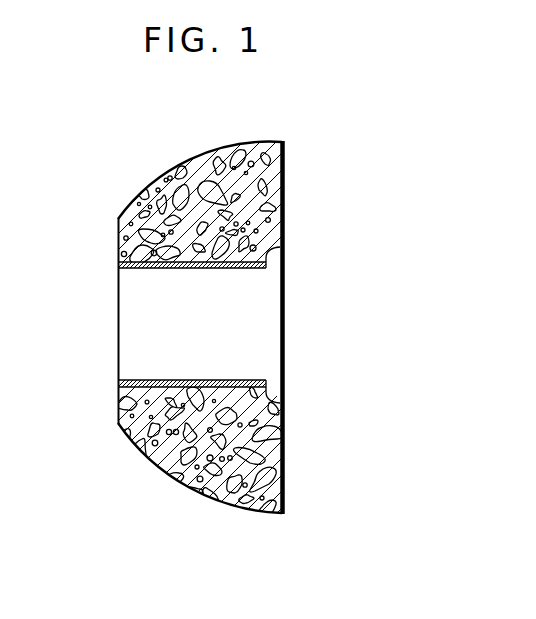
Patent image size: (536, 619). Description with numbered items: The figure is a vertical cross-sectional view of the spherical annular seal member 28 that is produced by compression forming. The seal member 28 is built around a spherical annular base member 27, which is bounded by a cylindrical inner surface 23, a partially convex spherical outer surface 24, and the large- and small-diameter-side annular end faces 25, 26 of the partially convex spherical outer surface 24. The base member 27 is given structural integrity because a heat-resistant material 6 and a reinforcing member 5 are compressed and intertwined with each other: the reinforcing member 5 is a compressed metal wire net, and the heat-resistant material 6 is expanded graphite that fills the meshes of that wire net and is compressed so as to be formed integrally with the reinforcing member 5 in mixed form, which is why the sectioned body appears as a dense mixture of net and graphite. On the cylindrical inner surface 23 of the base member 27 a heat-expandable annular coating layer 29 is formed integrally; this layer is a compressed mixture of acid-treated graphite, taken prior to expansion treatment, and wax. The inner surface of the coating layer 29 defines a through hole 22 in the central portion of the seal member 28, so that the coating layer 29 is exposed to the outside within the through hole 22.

The reinforcing member 5 is at (160, 467).
The heat-resistant material 6 is at (275, 461).
The through hole 22 is at (138, 345).
The cylindrical inner surface 23 is at (141, 268).
The partially convex spherical outer surface 24 is at (219, 155).
The large-diameter-side annular end face 25 is at (283, 224).
The small-diameter-side annular end face 26 is at (118, 250).
The spherical annular base member 27 is at (155, 180).
The spherical annular seal member 28 is at (292, 146).
The heat-expandable annular coating layer 29 is at (210, 268).